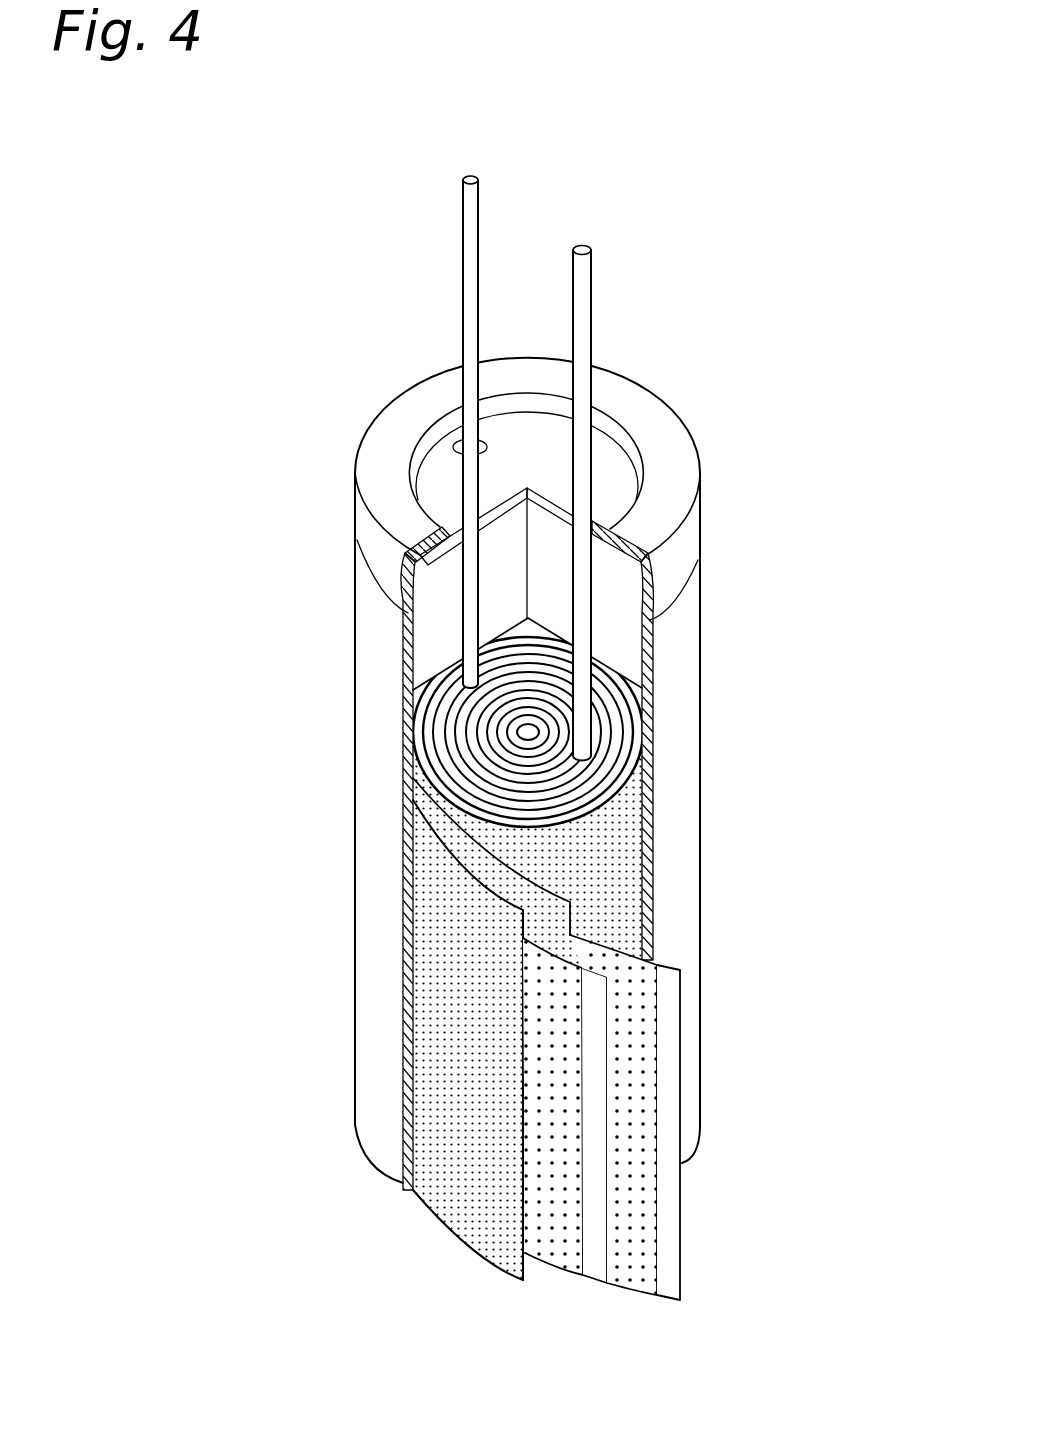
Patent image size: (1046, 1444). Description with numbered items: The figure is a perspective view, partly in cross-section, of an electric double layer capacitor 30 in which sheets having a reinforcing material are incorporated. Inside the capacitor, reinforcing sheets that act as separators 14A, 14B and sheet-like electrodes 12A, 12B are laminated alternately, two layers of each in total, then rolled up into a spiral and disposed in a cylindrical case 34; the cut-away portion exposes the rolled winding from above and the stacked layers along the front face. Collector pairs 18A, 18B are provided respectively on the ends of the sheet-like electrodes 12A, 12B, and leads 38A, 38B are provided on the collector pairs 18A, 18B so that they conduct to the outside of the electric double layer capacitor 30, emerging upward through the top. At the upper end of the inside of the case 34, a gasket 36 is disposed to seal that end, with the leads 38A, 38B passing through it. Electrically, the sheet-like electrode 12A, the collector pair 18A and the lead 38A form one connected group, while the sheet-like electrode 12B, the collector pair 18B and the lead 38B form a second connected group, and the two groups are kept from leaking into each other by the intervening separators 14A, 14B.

The electric double layer capacitor 30 is at (667, 210).
The case 34 is at (403, 423).
The gasket 36 is at (452, 480).
The lead 38A is at (463, 230).
The lead 38B is at (588, 315).
The reinforcing sheet (separator) 14A is at (470, 1003).
The reinforcing sheet (separator) 14B is at (545, 912).
The sheet-like electrode 12A is at (547, 1123).
The sheet-like electrode 12B is at (630, 1178).
The collector pair 18A is at (597, 1170).
The collector pair 18B is at (665, 1243).